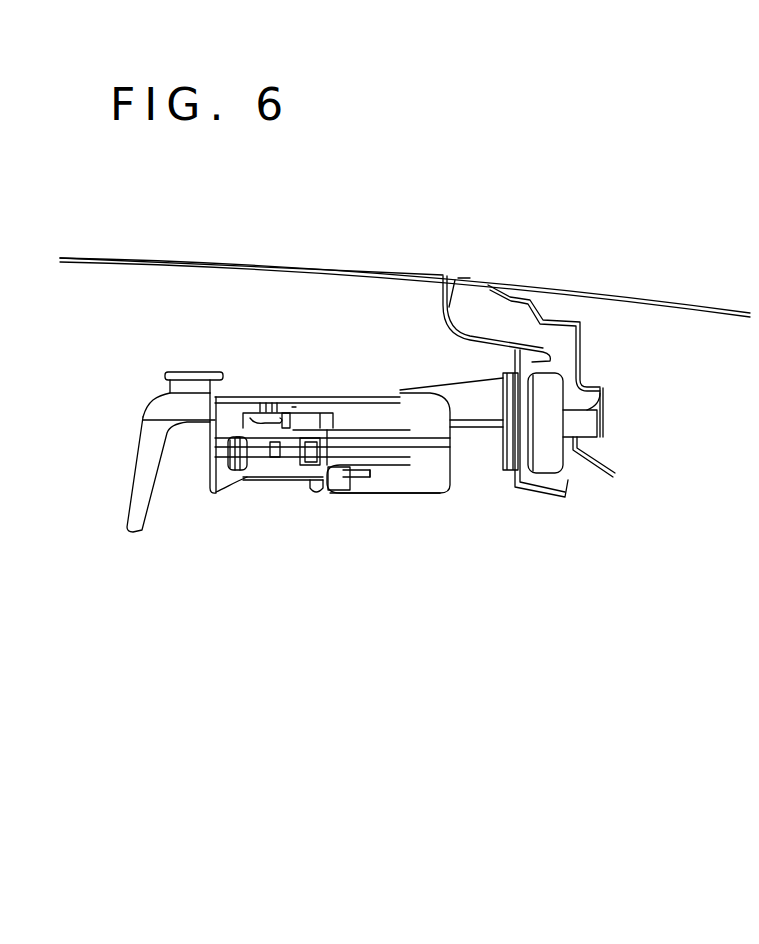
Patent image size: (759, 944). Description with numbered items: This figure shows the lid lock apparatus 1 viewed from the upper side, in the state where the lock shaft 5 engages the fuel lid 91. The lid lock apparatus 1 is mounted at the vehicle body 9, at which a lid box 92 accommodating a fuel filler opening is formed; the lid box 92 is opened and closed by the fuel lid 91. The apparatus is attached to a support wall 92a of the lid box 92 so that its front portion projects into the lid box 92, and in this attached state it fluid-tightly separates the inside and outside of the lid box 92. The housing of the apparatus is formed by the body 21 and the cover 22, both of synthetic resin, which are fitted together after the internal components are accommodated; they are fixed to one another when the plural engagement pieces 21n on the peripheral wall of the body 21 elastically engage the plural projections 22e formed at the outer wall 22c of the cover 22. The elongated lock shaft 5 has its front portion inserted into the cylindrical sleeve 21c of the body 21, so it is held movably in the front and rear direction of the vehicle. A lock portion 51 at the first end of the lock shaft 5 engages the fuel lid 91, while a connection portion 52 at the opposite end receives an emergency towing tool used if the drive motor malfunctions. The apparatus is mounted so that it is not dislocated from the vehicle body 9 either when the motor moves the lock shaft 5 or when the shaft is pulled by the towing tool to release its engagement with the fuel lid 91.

The lid lock apparatus 1 is at (148, 576).
The lock shaft 5 is at (155, 405).
The vehicle body 9 is at (148, 262).
The body 21 is at (346, 397).
The engagement pieces 21n is at (295, 430).
The cylindrical sleeve 21c is at (563, 487).
The cover 22 is at (413, 487).
The outer wall 22c is at (380, 460).
The projections 22e is at (300, 470).
The lock portion 51 is at (600, 395).
The connection portion 52 is at (140, 493).
The fuel lid 91 is at (680, 303).
The lid box 92 is at (492, 285).
The support wall 92a is at (492, 262).